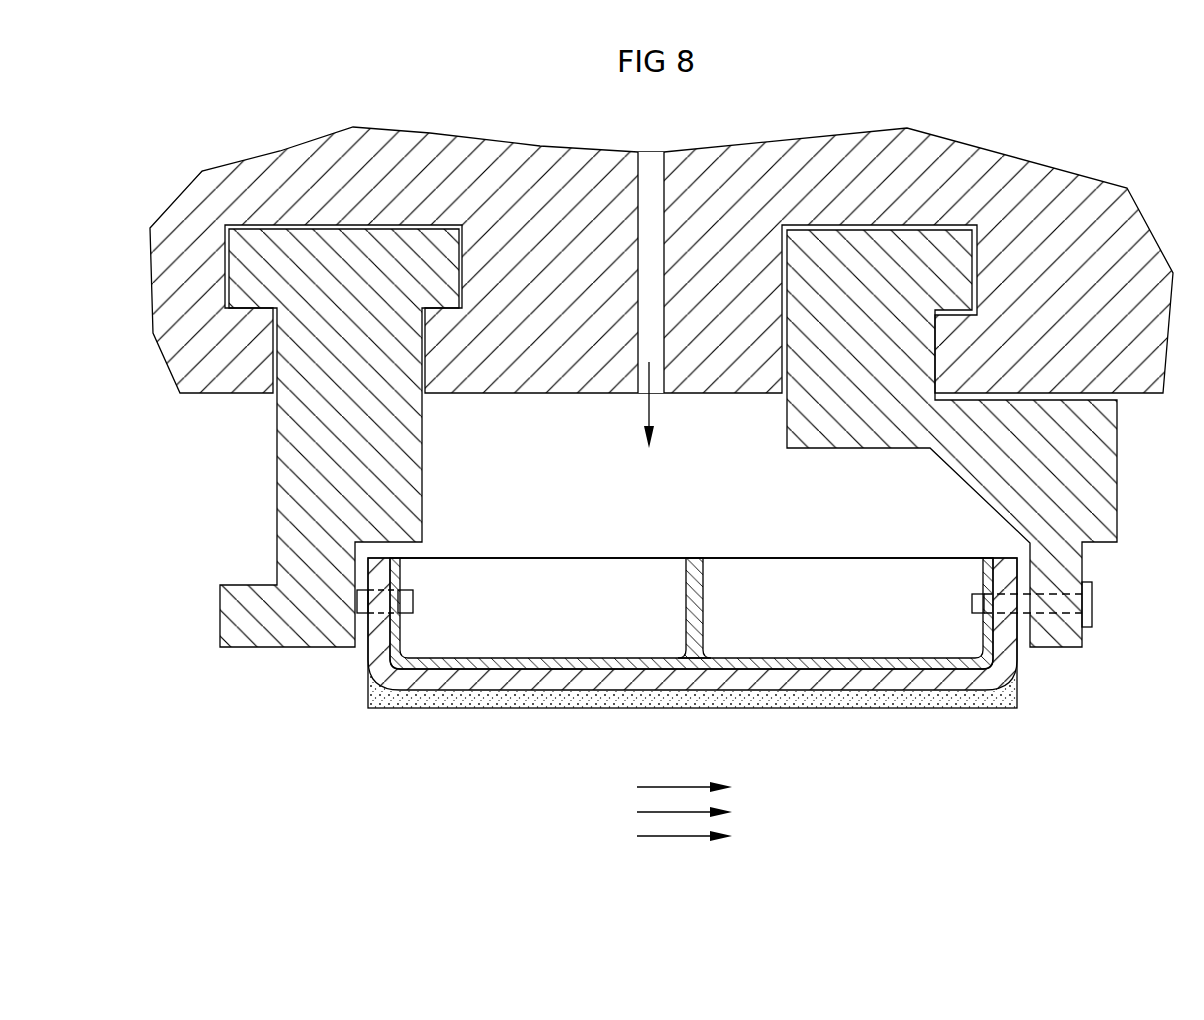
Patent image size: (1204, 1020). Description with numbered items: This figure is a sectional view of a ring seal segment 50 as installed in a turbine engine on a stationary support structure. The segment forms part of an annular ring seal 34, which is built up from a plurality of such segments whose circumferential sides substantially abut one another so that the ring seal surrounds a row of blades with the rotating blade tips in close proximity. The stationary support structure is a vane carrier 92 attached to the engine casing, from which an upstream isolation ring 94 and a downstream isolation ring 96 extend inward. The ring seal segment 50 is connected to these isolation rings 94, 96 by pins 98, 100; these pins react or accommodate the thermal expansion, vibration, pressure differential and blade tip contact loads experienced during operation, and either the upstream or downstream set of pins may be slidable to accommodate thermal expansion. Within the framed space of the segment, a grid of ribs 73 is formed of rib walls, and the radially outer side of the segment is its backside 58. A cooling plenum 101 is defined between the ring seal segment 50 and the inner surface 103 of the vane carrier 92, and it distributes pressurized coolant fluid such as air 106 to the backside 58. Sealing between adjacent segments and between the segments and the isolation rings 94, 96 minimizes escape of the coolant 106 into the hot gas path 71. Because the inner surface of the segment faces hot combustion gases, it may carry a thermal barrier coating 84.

The vane carrier 92 is at (1051, 188).
The upstream isolation ring 94 is at (277, 457).
The downstream isolation ring 96 is at (1112, 457).
The pin 98 is at (413, 601).
The pin 100 is at (1093, 605).
The cooling plenum 101 is at (607, 509).
The inner surface of the vane carrier 103 is at (716, 395).
The coolant air 106 is at (648, 412).
The grid of ribs 73 is at (702, 540).
The backside 58 is at (527, 665).
The thermal barrier coating 84 is at (942, 700).
The hot gas path 71 is at (673, 786).
The ring seal segment 50 is at (424, 731).
The annular ring seal 34 is at (692, 630).